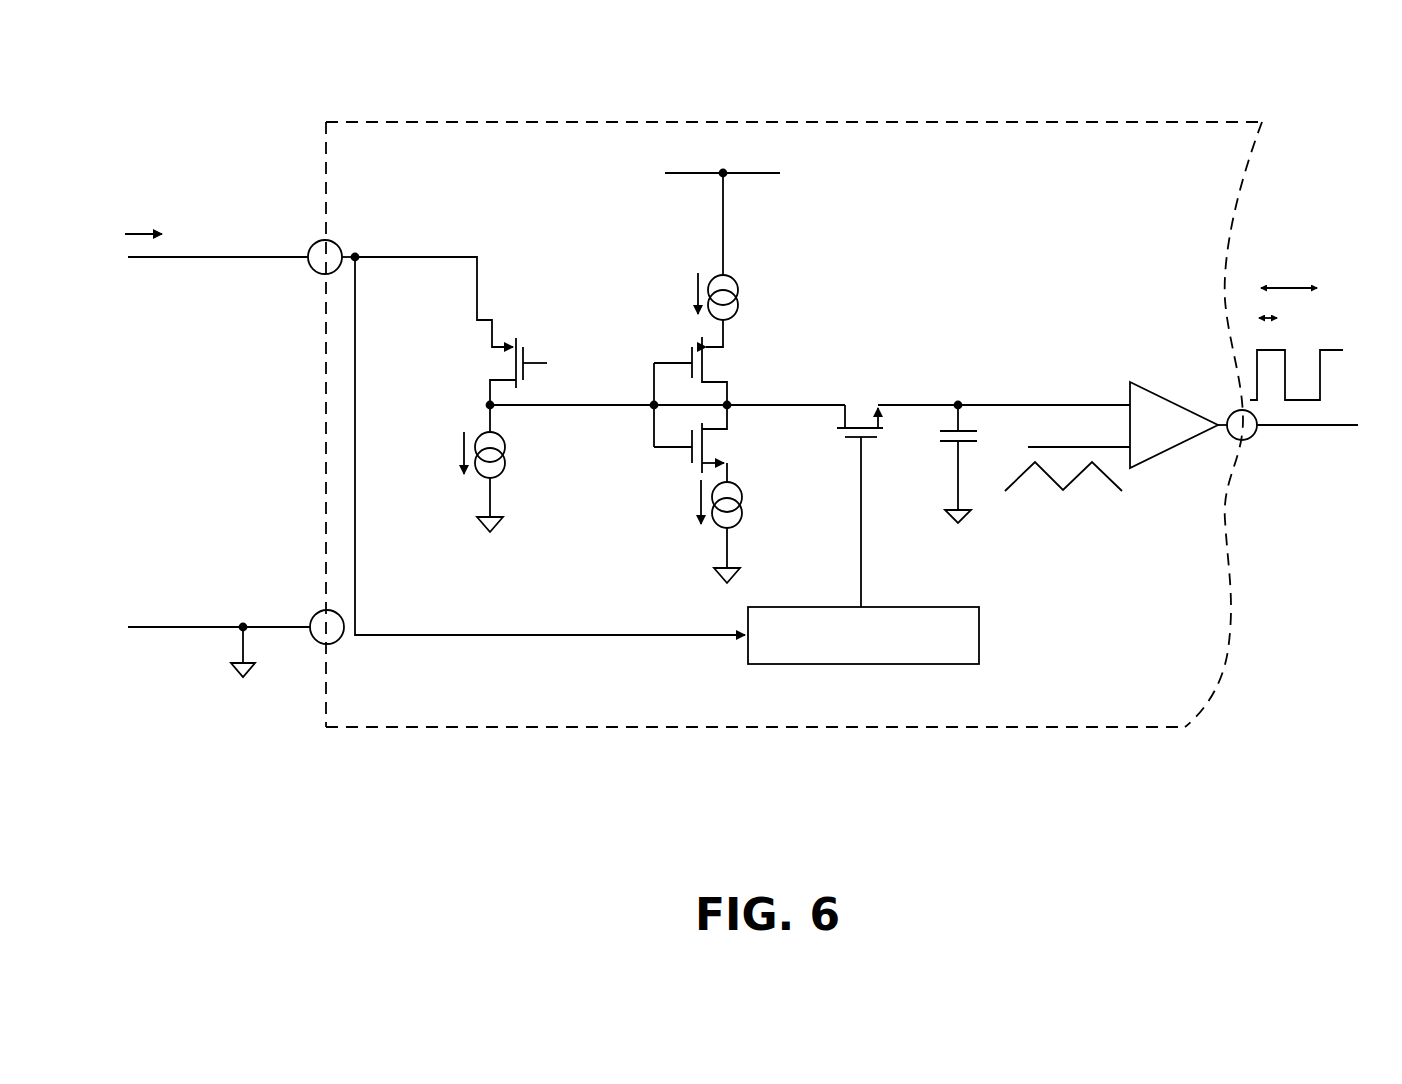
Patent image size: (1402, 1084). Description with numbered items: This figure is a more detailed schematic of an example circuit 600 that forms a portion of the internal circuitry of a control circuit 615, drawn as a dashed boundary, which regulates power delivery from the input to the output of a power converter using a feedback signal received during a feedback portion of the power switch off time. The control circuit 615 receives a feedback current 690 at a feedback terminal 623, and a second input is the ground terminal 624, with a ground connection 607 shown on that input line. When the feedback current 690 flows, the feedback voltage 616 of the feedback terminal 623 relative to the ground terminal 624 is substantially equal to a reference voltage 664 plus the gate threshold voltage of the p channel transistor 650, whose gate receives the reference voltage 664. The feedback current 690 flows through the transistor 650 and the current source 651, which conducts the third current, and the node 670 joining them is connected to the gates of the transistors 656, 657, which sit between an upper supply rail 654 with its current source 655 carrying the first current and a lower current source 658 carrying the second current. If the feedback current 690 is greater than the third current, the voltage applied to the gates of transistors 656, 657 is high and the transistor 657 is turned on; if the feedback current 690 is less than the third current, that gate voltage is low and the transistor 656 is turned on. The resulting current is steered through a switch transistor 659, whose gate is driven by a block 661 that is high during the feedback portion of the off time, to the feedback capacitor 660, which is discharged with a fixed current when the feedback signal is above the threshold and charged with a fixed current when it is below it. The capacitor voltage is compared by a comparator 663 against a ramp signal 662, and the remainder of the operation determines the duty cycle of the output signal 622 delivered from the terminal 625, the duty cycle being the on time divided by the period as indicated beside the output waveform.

The circuit 600 is at (213, 96).
The feedback current 690 is at (108, 201).
The feedback terminal 623 is at (345, 247).
The feedback voltage 616 is at (225, 427).
The ground terminal 624 is at (310, 603).
The ground reference 607 is at (235, 662).
The control circuit 615 is at (420, 732).
The p channel transistor 650 is at (480, 358).
The reference voltage 664 is at (557, 340).
The common node 670 is at (550, 412).
The current source 651 is at (432, 437).
The supply rail 654 is at (780, 173).
The current source I1 655 is at (735, 272).
The transistor 656 is at (735, 362).
The transistor 657 is at (732, 457).
The current source I2 658 is at (753, 503).
The sampling switch transistor 659 is at (853, 398).
The feedback capacitor 660 is at (970, 418).
The timing block 661 is at (970, 600).
The ramp signal 662 is at (1107, 497).
The comparator 663 is at (1162, 388).
The terminal 625 is at (1265, 437).
The output signal 622 is at (1345, 437).